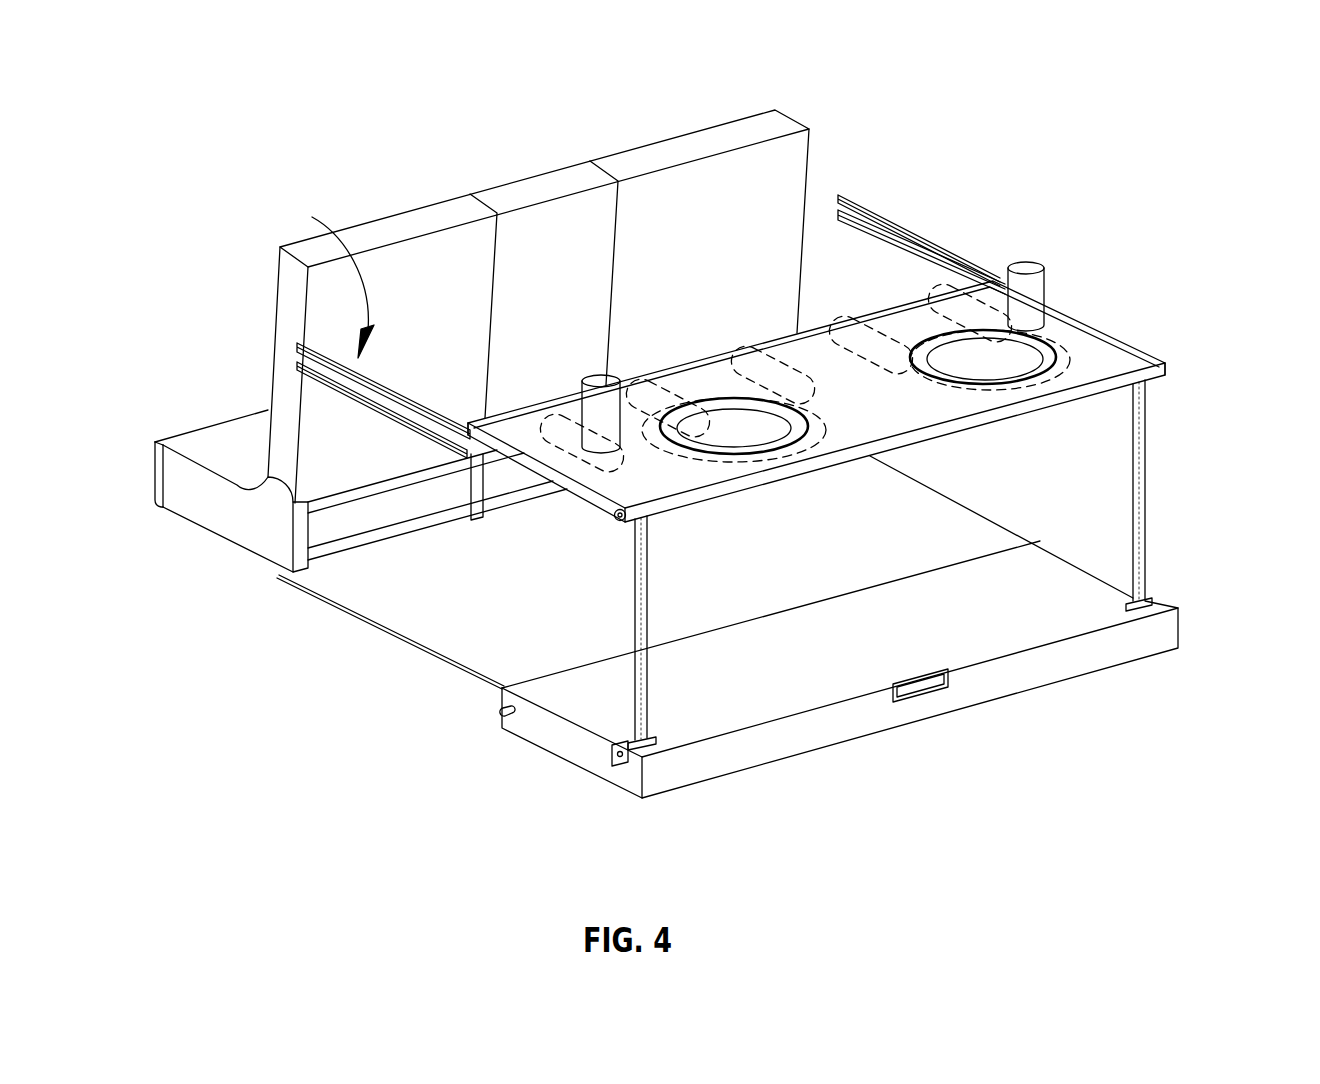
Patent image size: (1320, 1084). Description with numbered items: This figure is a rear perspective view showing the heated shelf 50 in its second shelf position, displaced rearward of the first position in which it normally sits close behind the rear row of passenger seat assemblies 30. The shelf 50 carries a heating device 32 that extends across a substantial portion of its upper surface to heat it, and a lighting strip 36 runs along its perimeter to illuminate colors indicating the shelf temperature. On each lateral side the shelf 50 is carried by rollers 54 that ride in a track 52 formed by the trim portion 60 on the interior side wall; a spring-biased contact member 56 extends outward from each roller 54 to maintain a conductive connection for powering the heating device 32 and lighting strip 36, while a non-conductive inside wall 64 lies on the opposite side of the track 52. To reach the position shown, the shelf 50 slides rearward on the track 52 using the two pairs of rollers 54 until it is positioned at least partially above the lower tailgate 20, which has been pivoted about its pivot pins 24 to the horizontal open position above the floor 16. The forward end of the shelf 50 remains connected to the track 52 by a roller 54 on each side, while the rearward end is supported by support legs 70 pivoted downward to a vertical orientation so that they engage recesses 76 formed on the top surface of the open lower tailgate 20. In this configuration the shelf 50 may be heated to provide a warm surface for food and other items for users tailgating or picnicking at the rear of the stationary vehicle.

The floor 16 is at (963, 520).
The lower tailgate 20 is at (1048, 568).
The pivot pins 24 is at (500, 712).
The rear row of passenger seat assemblies 30 is at (780, 125).
The heating device 32 is at (1068, 340).
The lighting strip 36 is at (1110, 330).
The shelf 50 is at (856, 417).
The track 52 is at (330, 274).
The rollers 54 is at (1168, 365).
The spring-biased contact member 56 is at (613, 517).
The trim portion 60 is at (294, 354).
The non-conductive inside wall 64 is at (335, 380).
The support legs 70 is at (637, 638).
The recesses 76 is at (650, 740).